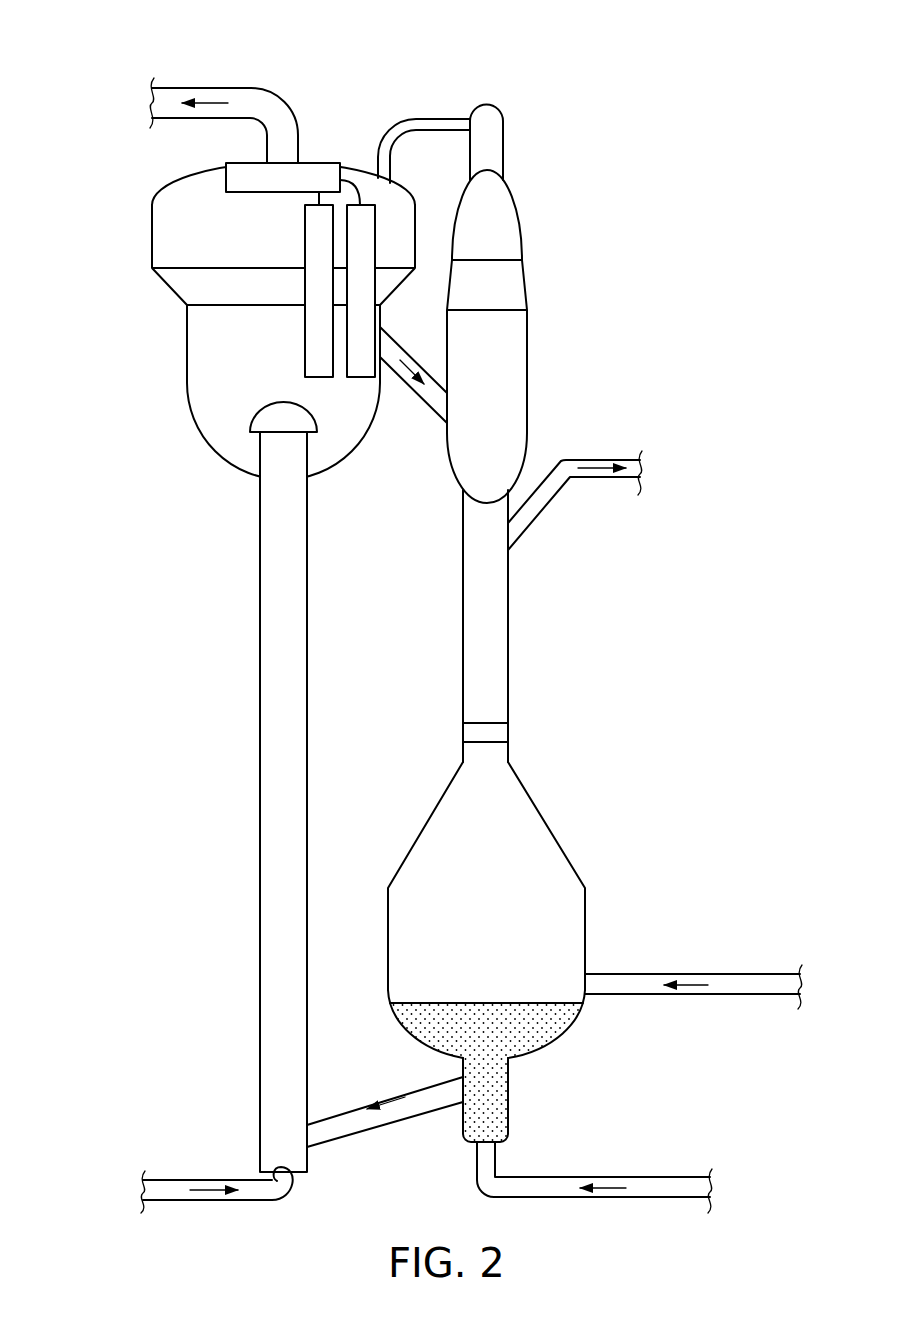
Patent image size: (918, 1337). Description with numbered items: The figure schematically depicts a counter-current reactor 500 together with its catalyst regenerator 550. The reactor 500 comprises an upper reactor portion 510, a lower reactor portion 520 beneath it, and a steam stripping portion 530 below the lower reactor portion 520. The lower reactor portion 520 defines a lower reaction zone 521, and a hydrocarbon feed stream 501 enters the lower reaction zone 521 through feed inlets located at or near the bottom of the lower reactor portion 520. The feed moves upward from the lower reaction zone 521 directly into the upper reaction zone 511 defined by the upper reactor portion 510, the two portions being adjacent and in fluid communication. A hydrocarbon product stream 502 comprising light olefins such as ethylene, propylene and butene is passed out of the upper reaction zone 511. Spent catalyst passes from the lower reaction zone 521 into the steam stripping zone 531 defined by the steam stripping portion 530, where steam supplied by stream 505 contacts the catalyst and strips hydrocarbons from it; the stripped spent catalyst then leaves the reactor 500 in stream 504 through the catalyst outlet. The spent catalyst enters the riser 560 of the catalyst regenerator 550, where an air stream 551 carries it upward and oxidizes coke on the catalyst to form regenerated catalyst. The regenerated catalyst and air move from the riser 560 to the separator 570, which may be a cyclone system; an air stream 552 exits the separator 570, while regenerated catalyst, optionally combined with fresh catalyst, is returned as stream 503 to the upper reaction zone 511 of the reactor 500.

The reactor 500 is at (680, 118).
The catalyst regenerator 550 is at (136, 631).
The separator 570 is at (152, 240).
The air stream 552 is at (203, 88).
The riser 560 is at (258, 797).
The air stream 551 is at (210, 1178).
The catalyst stream 503 is at (417, 397).
The upper reactor portion 510 is at (508, 635).
The upper reaction zone 511 is at (472, 637).
The hydrocarbon product stream 502 is at (602, 457).
The lower reactor portion 520 is at (587, 937).
The lower reaction zone 521 is at (507, 905).
The steam stripping zone 531 is at (487, 1012).
The steam stripping portion 530 is at (510, 1093).
The hydrocarbon feed stream 501 is at (692, 973).
The spent catalyst stream 504 is at (385, 1098).
The steam stream 505 is at (605, 1178).